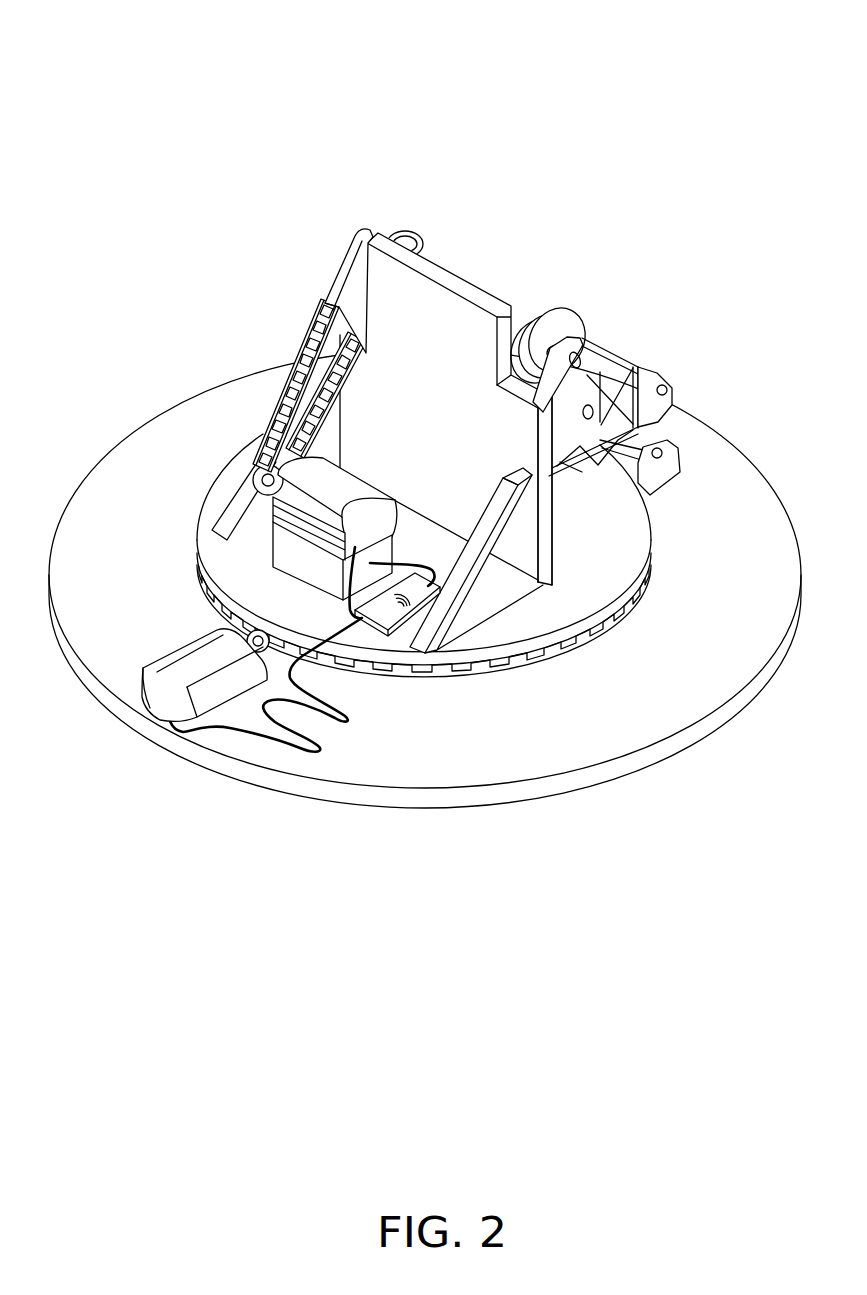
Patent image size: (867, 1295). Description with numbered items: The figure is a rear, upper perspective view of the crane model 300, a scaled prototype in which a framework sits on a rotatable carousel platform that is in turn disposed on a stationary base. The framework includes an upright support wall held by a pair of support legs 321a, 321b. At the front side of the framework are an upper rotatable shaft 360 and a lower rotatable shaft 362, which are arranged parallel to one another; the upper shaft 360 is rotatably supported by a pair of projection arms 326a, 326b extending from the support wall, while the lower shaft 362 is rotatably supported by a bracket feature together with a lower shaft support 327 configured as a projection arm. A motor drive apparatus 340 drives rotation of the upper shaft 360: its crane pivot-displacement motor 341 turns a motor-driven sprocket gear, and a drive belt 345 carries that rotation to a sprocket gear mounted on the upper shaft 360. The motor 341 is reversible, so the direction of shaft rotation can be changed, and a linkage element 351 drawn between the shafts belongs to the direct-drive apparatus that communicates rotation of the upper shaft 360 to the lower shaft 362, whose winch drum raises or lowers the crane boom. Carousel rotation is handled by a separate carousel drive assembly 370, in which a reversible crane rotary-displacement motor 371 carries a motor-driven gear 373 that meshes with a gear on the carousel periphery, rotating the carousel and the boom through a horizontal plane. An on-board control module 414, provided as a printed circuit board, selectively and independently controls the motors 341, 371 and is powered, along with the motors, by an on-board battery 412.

The crane model 300 is at (730, 87).
The upper shaft support structure 326a is at (325, 262).
The upper shaft support structure 326b is at (558, 306).
The motor drive apparatus 340 is at (266, 320).
The drive belt 345 is at (248, 406).
The crank arm 351 is at (583, 298).
The upper rotatable shaft 360 is at (603, 340).
The lower rotatable shaft 362 is at (622, 370).
The support leg 321a is at (498, 589).
The support leg 321b is at (232, 503).
The lower shaft support 327 is at (582, 432).
The crane pivot-displacement motor 341 is at (298, 497).
The on-board battery 412 is at (280, 545).
The control module 414 is at (394, 622).
The motor-driven gear 373 is at (242, 627).
The carousel drive assembly 370 is at (146, 659).
The crane rotary-displacement motor 371 is at (163, 703).